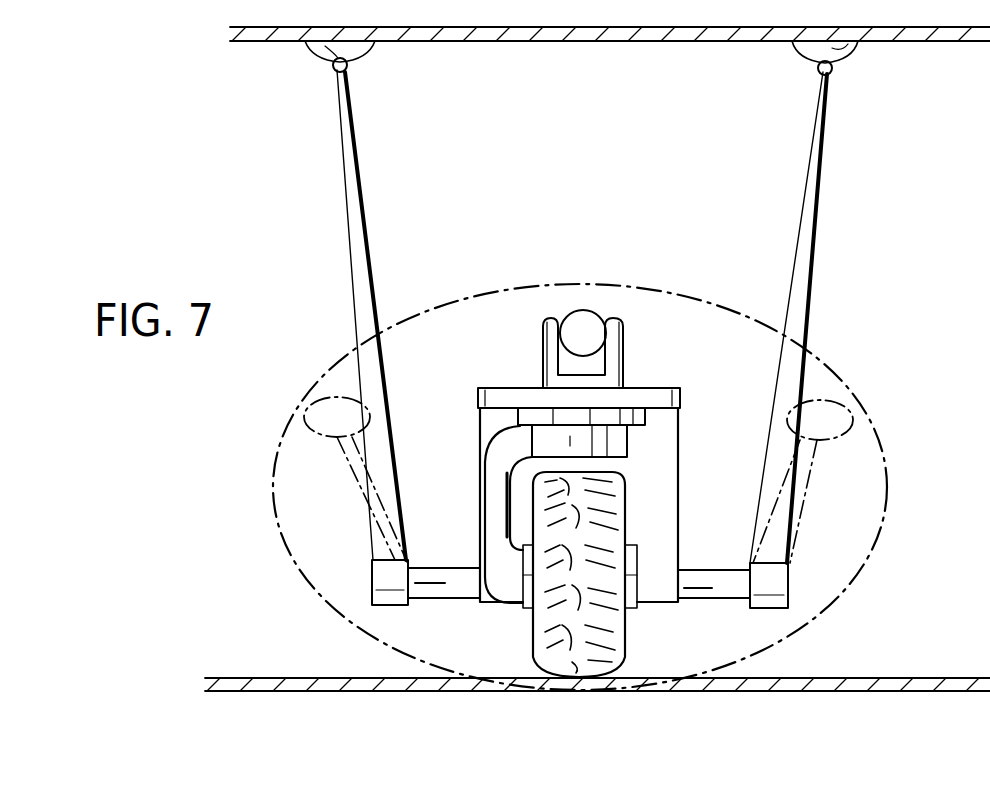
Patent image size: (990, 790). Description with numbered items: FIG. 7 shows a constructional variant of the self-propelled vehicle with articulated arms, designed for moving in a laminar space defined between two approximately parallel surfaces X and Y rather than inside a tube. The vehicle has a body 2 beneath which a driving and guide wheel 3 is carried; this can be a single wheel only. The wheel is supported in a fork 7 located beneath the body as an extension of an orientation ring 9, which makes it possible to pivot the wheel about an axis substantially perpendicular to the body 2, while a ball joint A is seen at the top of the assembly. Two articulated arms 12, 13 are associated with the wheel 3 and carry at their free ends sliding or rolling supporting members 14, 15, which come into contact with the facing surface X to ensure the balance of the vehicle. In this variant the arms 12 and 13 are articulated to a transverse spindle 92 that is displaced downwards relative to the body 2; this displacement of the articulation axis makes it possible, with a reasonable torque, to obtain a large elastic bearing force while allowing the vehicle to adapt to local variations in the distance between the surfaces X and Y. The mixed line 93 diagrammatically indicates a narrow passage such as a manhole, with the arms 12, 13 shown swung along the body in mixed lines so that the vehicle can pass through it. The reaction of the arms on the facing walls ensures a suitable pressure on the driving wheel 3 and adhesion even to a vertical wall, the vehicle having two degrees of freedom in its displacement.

The body 2 is at (642, 387).
The driving and guide wheel 3 is at (547, 618).
The fork 7 is at (498, 488).
The orientation ring 9 is at (540, 416).
The articulated arm 12 is at (353, 227).
The articulated arm 13 is at (800, 285).
The supporting member 14 is at (322, 46).
The supporting member 15 is at (830, 50).
The transverse spindle 92 is at (725, 580).
The mixed line 93 is at (520, 287).
The ball joint A is at (587, 325).
The surface X is at (636, 46).
The surface Y is at (845, 679).